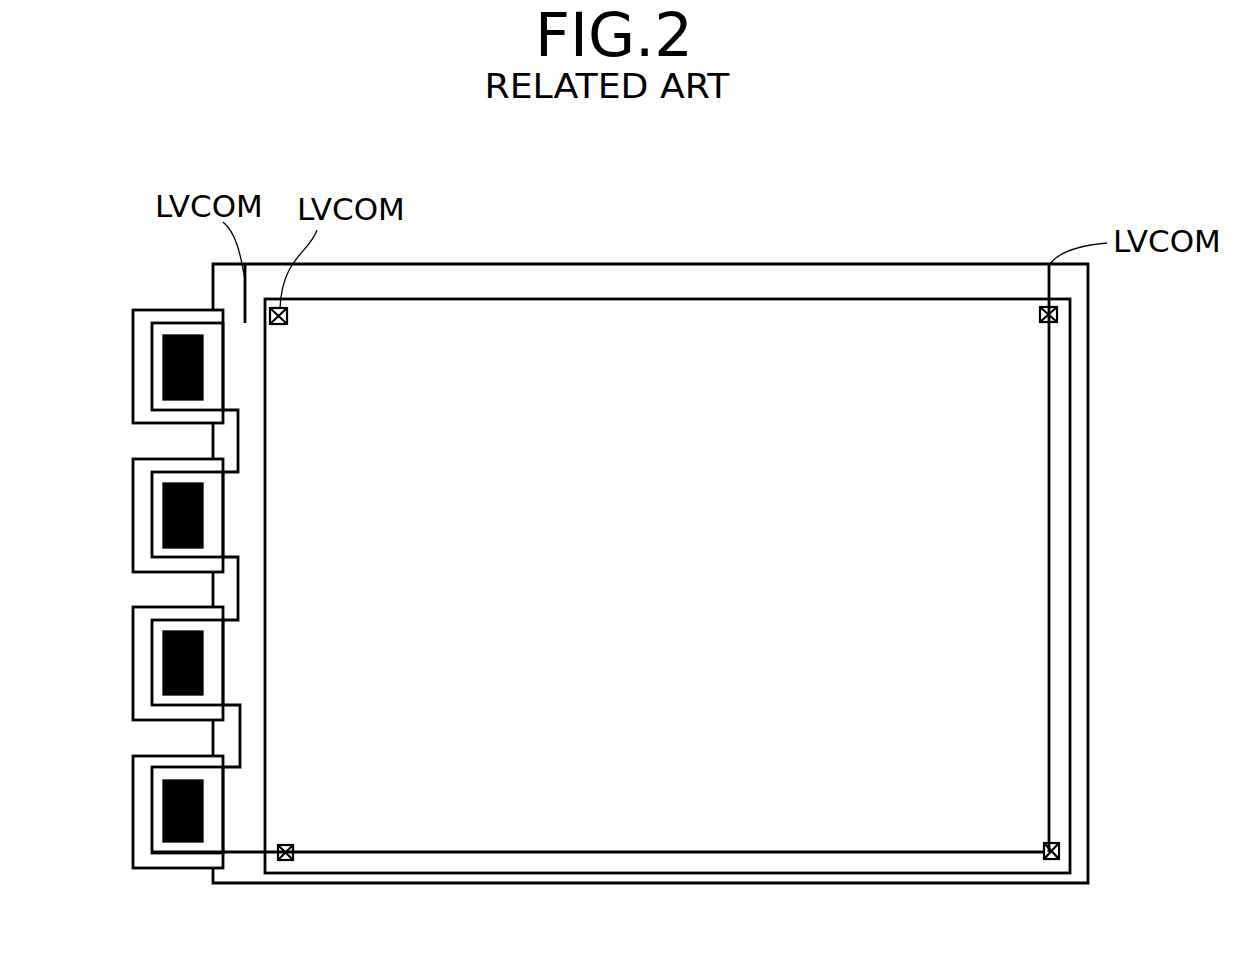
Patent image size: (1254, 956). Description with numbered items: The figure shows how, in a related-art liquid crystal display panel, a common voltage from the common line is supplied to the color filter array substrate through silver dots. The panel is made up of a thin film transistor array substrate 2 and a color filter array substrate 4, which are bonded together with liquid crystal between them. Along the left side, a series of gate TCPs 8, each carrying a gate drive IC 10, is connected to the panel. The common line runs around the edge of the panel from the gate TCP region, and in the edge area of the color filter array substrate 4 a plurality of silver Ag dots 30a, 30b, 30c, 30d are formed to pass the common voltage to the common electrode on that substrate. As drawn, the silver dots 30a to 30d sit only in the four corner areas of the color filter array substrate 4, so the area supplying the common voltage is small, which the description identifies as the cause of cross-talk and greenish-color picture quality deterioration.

The thin film transistor array substrate 2 is at (1090, 286).
The color filter array substrate 4 is at (1070, 325).
The gate TCP 8 is at (134, 344).
The gate drive IC 10 is at (164, 380).
The silver dot 30a is at (288, 314).
The silver dot 30b is at (293, 847).
The silver dot 30c is at (1044, 846).
The silver dot 30d is at (1040, 314).